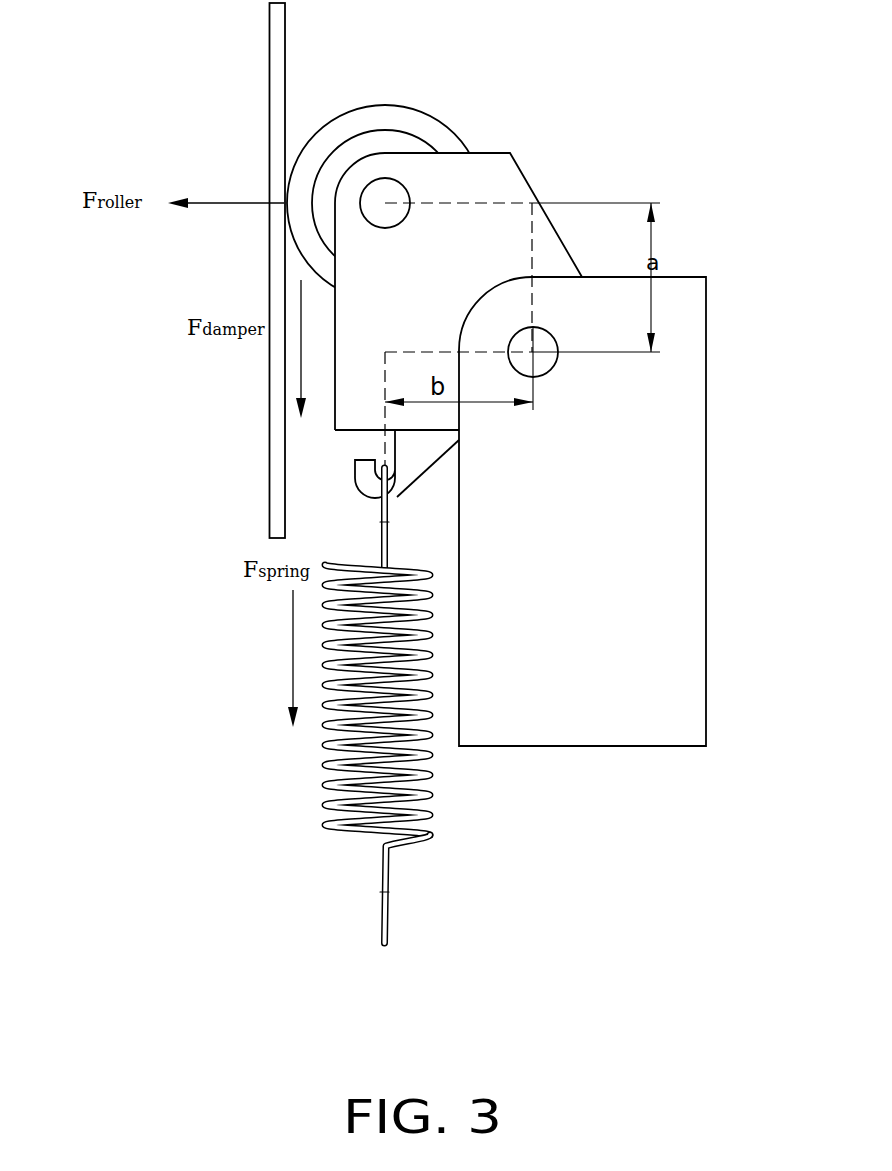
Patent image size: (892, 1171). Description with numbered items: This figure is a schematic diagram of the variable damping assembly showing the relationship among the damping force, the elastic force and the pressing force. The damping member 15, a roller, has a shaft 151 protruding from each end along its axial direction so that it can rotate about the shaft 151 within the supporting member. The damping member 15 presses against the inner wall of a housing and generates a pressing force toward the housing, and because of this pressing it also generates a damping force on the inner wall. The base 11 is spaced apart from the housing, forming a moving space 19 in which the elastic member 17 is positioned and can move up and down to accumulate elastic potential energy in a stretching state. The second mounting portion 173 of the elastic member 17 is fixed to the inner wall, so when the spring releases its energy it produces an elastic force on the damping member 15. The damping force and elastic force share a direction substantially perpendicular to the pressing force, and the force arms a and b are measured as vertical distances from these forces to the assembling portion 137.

The base 11 is at (687, 443).
The assembling portion 137 is at (540, 363).
The damping member 15 is at (388, 118).
The shaft 151 is at (392, 193).
The elastic member 17 is at (430, 775).
The second mounting portion 173 is at (387, 930).
The moving space 19 is at (323, 508).